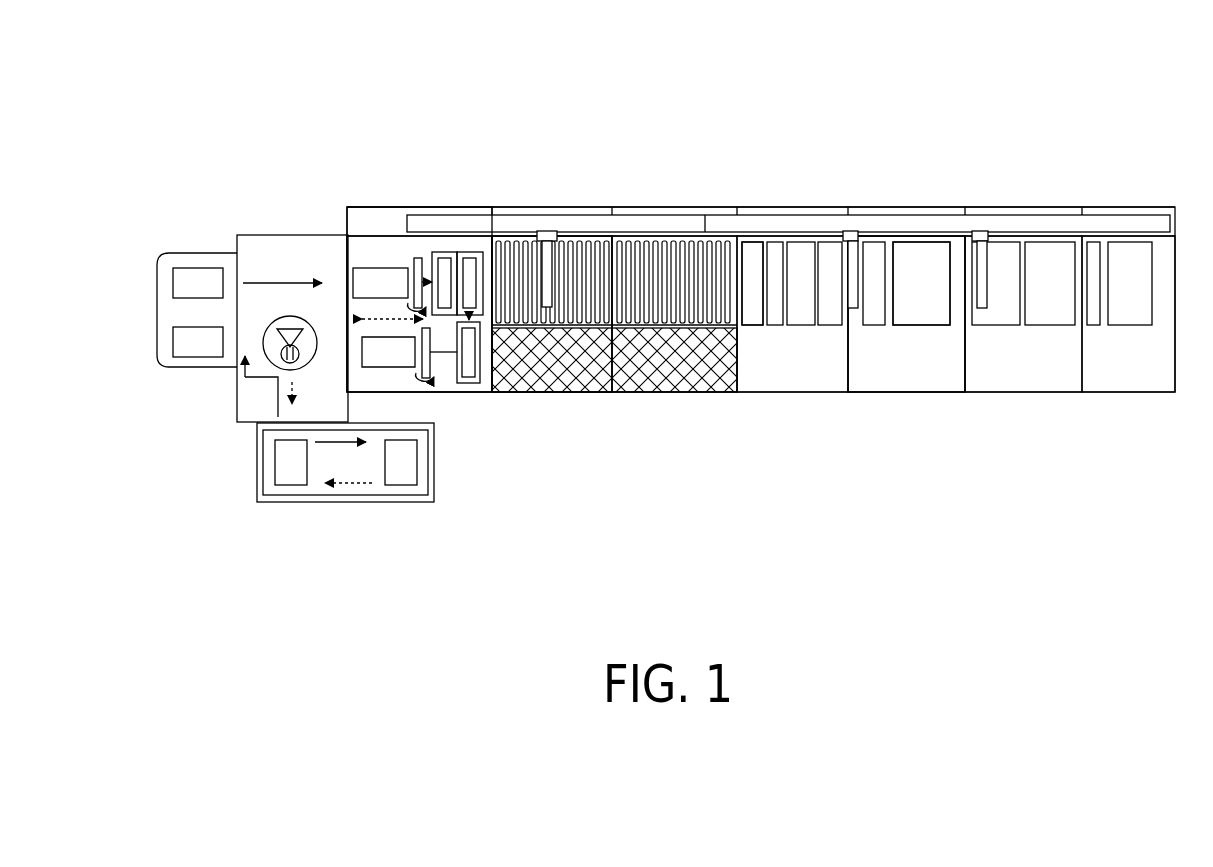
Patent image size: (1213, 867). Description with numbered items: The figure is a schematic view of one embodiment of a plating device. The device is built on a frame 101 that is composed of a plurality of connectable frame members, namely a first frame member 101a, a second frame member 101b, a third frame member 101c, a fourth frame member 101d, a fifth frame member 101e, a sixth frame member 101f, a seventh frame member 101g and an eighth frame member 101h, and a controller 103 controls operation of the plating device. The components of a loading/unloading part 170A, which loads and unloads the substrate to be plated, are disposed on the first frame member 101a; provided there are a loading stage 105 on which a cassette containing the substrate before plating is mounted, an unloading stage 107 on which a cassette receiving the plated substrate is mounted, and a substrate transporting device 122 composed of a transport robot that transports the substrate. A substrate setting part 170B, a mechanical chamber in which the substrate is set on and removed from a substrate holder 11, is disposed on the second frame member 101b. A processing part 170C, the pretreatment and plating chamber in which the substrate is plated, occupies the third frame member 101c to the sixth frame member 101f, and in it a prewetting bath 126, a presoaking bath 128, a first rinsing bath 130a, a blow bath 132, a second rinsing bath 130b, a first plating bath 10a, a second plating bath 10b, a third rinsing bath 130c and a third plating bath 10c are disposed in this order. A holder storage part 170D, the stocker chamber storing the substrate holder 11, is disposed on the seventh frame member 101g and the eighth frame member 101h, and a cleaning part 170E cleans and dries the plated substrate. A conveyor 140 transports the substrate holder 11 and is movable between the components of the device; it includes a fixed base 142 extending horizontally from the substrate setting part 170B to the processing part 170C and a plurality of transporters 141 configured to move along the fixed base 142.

The frame 101 is at (1170, 397).
The first frame member 101a is at (243, 235).
The second frame member 101b is at (472, 394).
The third frame member 101c is at (800, 394).
The fourth frame member 101d is at (915, 394).
The fifth frame member 101e is at (1020, 394).
The sixth frame member 101f is at (1108, 394).
The seventh frame member 101g is at (552, 394).
The eighth frame member 101h is at (707, 394).
The controller 103 is at (375, 222).
The loading stage 105 is at (192, 268).
The unloading stage 107 is at (172, 358).
The substrate holder 11 is at (512, 240).
The substrate transporting device 122 is at (314, 362).
The prewetting bath 126 is at (750, 236).
The presoaking bath 128 is at (798, 240).
The first rinsing bath 130a is at (830, 240).
The second rinsing bath 130b is at (920, 240).
The third rinsing bath 130c is at (1093, 240).
The blow bath 132 is at (868, 240).
The first plating bath 10a is at (1003, 240).
The second plating bath 10b is at (1042, 240).
The third plating bath 10c is at (1130, 240).
The conveyor 140 is at (1160, 213).
The transporter 141 is at (547, 232).
The fixed base 142 is at (718, 216).
The loading/unloading part 170A is at (224, 424).
The substrate setting part 170B is at (430, 188).
The processing part 170C is at (948, 158).
The holder storage part 170D is at (622, 188).
The cleaning part 170E is at (340, 508).